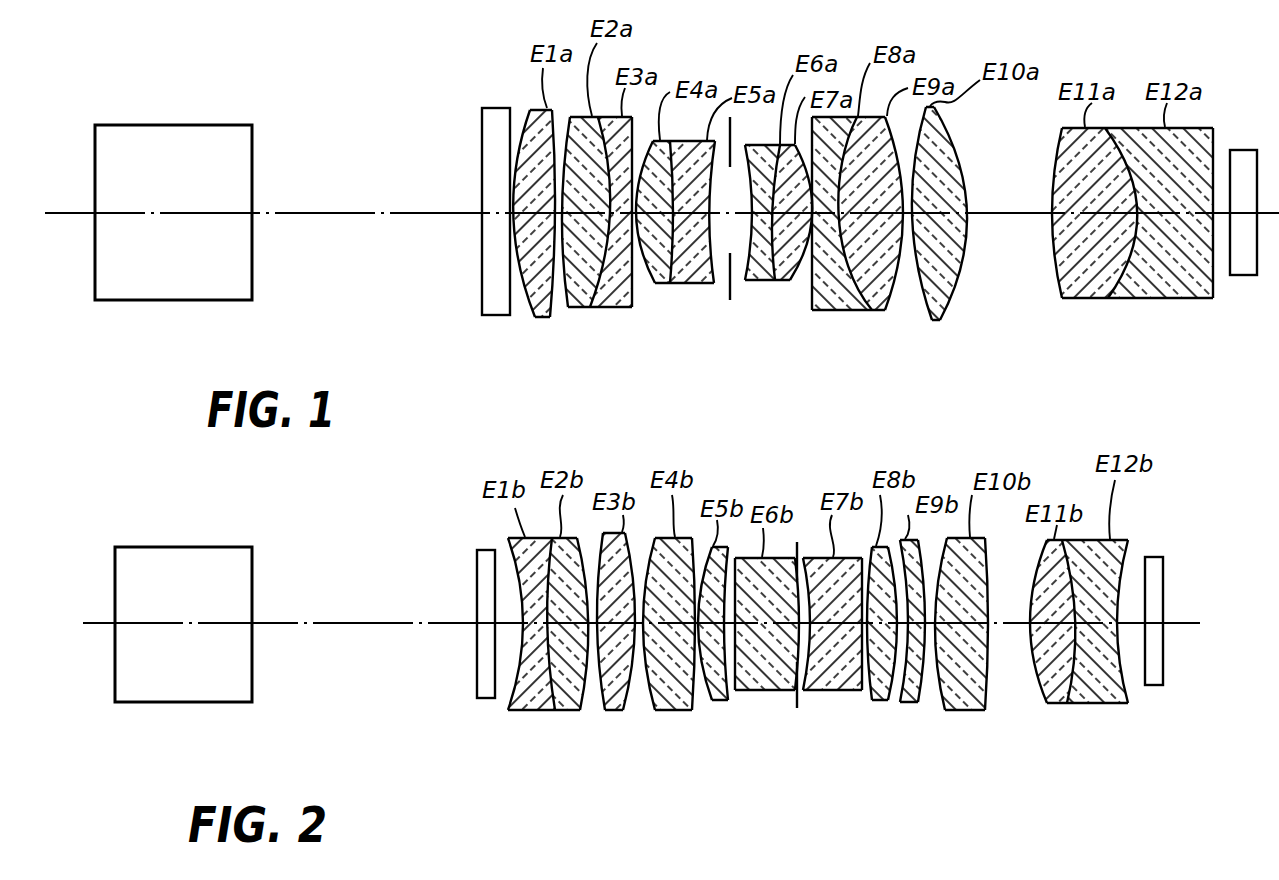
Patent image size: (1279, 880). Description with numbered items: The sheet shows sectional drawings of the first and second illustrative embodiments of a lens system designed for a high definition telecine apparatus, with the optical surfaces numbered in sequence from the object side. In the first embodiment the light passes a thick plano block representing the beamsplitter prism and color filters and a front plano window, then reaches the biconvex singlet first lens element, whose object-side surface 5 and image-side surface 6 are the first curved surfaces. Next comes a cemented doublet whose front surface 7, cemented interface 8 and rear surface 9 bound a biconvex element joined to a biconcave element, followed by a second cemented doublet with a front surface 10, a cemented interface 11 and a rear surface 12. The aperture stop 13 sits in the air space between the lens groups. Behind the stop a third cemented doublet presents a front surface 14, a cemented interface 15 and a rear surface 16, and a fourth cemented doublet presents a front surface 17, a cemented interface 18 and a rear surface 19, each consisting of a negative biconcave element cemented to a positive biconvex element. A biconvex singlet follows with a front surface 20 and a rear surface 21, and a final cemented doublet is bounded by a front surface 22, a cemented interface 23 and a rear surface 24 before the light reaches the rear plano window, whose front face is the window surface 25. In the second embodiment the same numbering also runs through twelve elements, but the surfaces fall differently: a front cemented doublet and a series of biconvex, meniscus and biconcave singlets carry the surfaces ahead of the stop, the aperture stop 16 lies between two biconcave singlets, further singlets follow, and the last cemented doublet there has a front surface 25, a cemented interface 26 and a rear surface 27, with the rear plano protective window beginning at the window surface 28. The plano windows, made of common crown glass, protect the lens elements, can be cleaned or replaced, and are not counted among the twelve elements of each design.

In FIG. 1, the lens surface 5 is at (527, 316).
In FIG. 2, the lens surface 5 is at (506, 701).
In FIG. 1, the lens surface 6 is at (552, 298).
In FIG. 2, the lens surface 6 is at (556, 698).
In FIG. 1, the lens surface 7 is at (570, 296).
In FIG. 2, the lens surface 7 is at (578, 704).
In FIG. 1, the lens surface 8 is at (596, 296).
In FIG. 2, the lens surface 8 is at (600, 702).
In FIG. 1, the lens surface 9 is at (632, 292).
In FIG. 2, the lens surface 9 is at (636, 702).
In FIG. 1, the lens surface 10 is at (658, 284).
In FIG. 2, the lens surface 10 is at (653, 702).
In FIG. 1, the lens surface 11 is at (672, 285).
In FIG. 2, the lens surface 11 is at (702, 702).
In FIG. 1, the lens surface 12 is at (713, 284).
In FIG. 2, the lens surface 12 is at (708, 701).
In FIG. 1, the aperture stop 13 is at (731, 300).
In FIG. 2, the aperture stop 13 is at (728, 701).
In FIG. 1, the lens surface 14 is at (748, 281).
In FIG. 2, the lens surface 14 is at (740, 692).
In FIG. 1, the lens surface 15 is at (776, 282).
In FIG. 2, the lens surface 15 is at (790, 692).
In FIG. 1, the aperture stop 16 is at (792, 282).
In FIG. 2, the aperture stop 16 is at (798, 700).
In FIG. 1, the lens surface 17 is at (815, 311).
In FIG. 2, the lens surface 17 is at (806, 692).
In FIG. 1, the lens surface 18 is at (872, 304).
In FIG. 2, the lens surface 18 is at (860, 692).
In FIG. 1, the lens surface 19 is at (897, 297).
In FIG. 2, the lens surface 19 is at (873, 700).
In FIG. 1, the lens surface 20 is at (921, 292).
In FIG. 2, the lens surface 20 is at (890, 702).
In FIG. 1, the lens surface 21 is at (952, 280).
In FIG. 2, the lens surface 21 is at (902, 702).
In FIG. 1, the lens surface 22 is at (1060, 283).
In FIG. 2, the lens surface 22 is at (918, 702).
In FIG. 1, the lens surface 23 is at (1110, 275).
In FIG. 2, the lens surface 23 is at (950, 710).
In FIG. 1, the lens surface 24 is at (1210, 265).
In FIG. 2, the lens surface 24 is at (988, 708).
In FIG. 1, the plano window surface 25 is at (1225, 270).
In FIG. 2, the plano window surface 25 is at (1035, 648).
In FIG. 2, the lens surface 26 is at (1067, 690).
In FIG. 2, the lens surface 27 is at (1127, 680).
In FIG. 2, the plano window surface 28 is at (1150, 655).